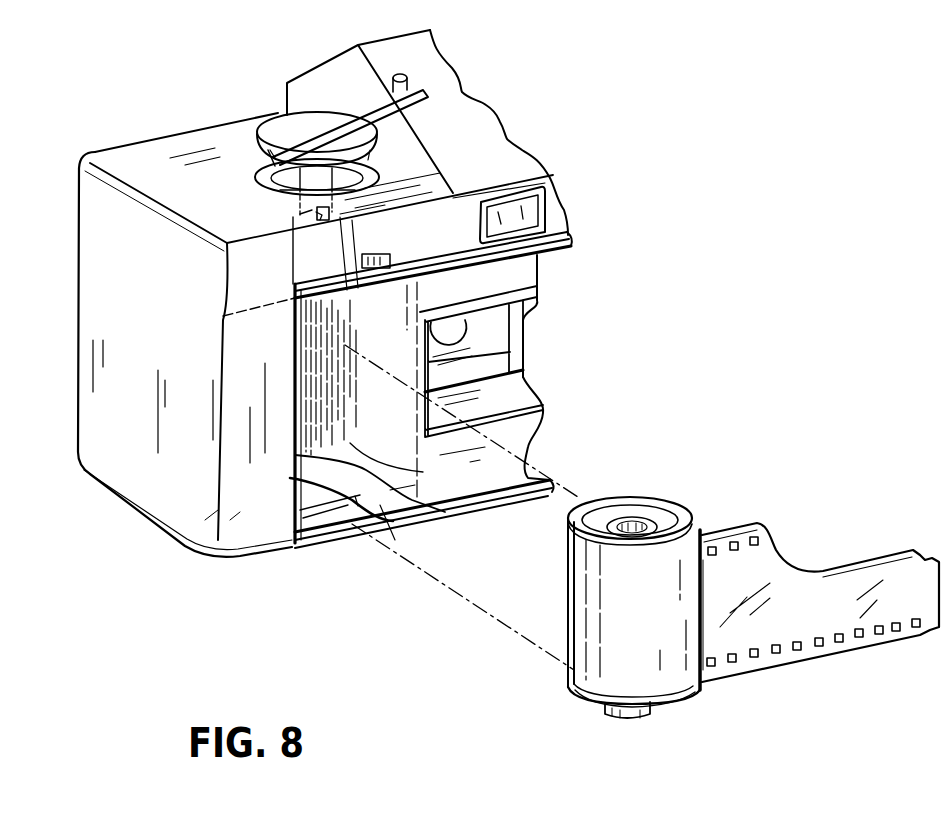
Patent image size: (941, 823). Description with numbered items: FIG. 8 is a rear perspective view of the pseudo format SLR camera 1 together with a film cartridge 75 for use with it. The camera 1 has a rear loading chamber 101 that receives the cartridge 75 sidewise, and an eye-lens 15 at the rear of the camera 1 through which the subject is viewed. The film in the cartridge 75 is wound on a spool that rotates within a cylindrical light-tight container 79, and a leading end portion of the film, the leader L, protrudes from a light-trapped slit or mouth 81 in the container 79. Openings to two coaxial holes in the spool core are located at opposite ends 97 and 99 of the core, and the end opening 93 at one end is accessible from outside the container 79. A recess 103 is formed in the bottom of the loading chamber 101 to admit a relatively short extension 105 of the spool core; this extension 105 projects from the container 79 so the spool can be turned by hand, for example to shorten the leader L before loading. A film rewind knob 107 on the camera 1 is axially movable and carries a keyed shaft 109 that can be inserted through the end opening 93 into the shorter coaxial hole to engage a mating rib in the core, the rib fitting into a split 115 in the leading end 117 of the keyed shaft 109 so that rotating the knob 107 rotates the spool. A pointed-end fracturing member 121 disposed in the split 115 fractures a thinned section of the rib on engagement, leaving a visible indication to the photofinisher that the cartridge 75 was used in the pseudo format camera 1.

The camera 1 is at (72, 352).
The eye-lens 15 is at (527, 205).
The film cartridge 75 is at (560, 590).
The cylindrical light-tight container 79 is at (592, 557).
The light-trapped slit or mouth 81 is at (703, 615).
The end opening 93 is at (637, 518).
The end of the core 97 is at (647, 513).
The end of the core 99 is at (588, 700).
The rear loading chamber 101 is at (416, 412).
The recess 103 is at (352, 530).
The short extension 105 is at (648, 710).
The film rewind knob 107 is at (300, 123).
The keyed shaft 109 is at (265, 194).
The split 115 is at (318, 222).
The leading end 117 is at (300, 218).
The pointed-end fracturing member 121 is at (322, 220).
The leader L is at (857, 602).